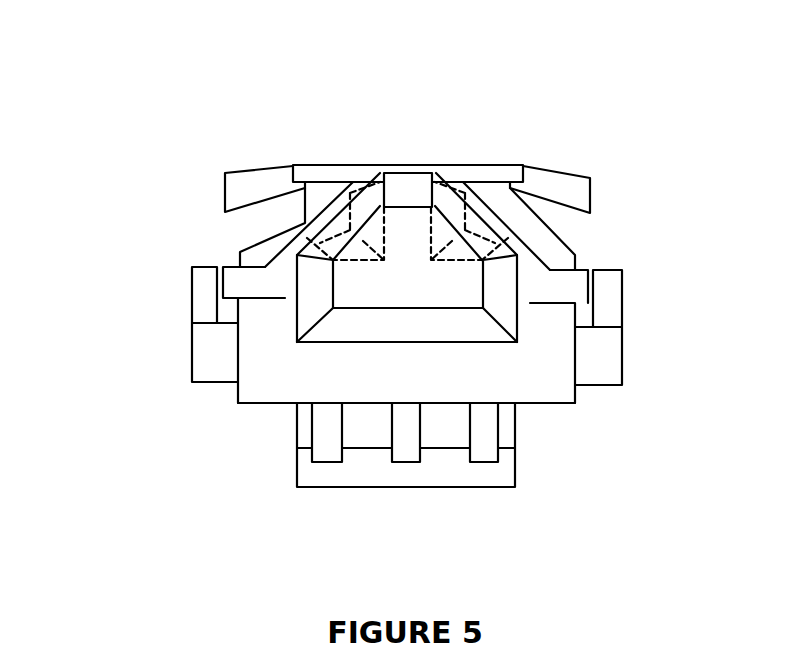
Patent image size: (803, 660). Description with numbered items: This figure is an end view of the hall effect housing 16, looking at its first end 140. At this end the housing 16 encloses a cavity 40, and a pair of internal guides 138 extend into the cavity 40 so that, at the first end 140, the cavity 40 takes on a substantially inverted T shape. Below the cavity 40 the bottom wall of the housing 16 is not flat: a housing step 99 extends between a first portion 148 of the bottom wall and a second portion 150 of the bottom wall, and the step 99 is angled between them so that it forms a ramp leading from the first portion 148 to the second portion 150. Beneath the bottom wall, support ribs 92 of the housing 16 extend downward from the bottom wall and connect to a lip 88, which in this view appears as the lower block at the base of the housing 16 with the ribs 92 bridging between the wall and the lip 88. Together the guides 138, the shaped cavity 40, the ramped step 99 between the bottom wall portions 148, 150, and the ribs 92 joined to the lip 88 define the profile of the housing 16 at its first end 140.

The housing 16 is at (204, 149).
The cavity 40 is at (350, 290).
The internal guides 138 is at (384, 205).
The first end 140 is at (473, 312).
The first portion of bottom wall 148 is at (467, 345).
The housing step 99 is at (277, 380).
The second portion of bottom wall 150 is at (283, 403).
The lip 88 is at (307, 488).
The support ribs 92 is at (330, 462).